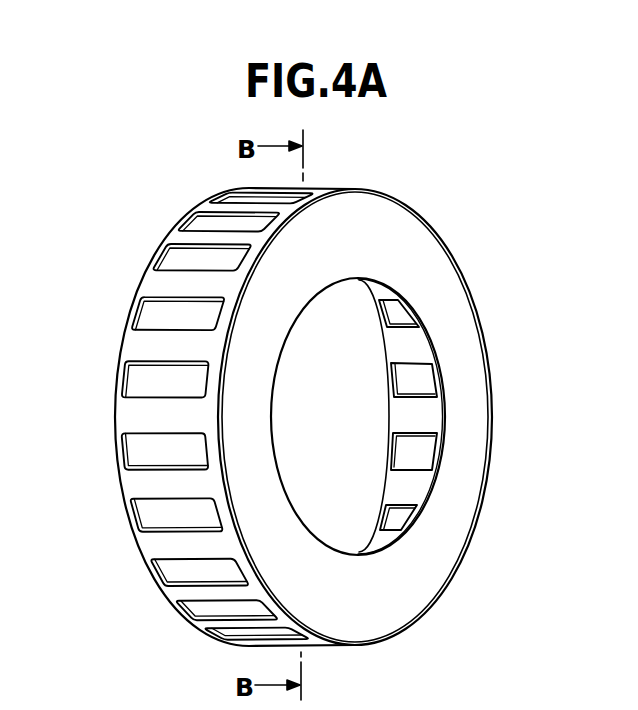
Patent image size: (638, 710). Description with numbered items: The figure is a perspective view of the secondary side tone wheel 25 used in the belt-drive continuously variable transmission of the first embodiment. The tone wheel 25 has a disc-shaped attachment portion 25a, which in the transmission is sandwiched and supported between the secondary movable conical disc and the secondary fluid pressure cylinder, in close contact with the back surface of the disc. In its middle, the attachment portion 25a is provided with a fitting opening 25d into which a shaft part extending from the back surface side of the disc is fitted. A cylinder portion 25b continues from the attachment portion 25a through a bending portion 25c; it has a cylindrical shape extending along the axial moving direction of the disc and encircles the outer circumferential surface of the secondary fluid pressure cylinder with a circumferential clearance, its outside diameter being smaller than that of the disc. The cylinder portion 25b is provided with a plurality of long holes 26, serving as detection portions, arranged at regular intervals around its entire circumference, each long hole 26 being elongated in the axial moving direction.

The secondary side tone wheel 25 is at (295, 379).
The attachment portion 25a is at (447, 280).
The cylinder portion 25b is at (163, 350).
The bending portion 25c is at (368, 190).
The fitting opening 25d is at (440, 380).
The long holes 26 is at (155, 518).